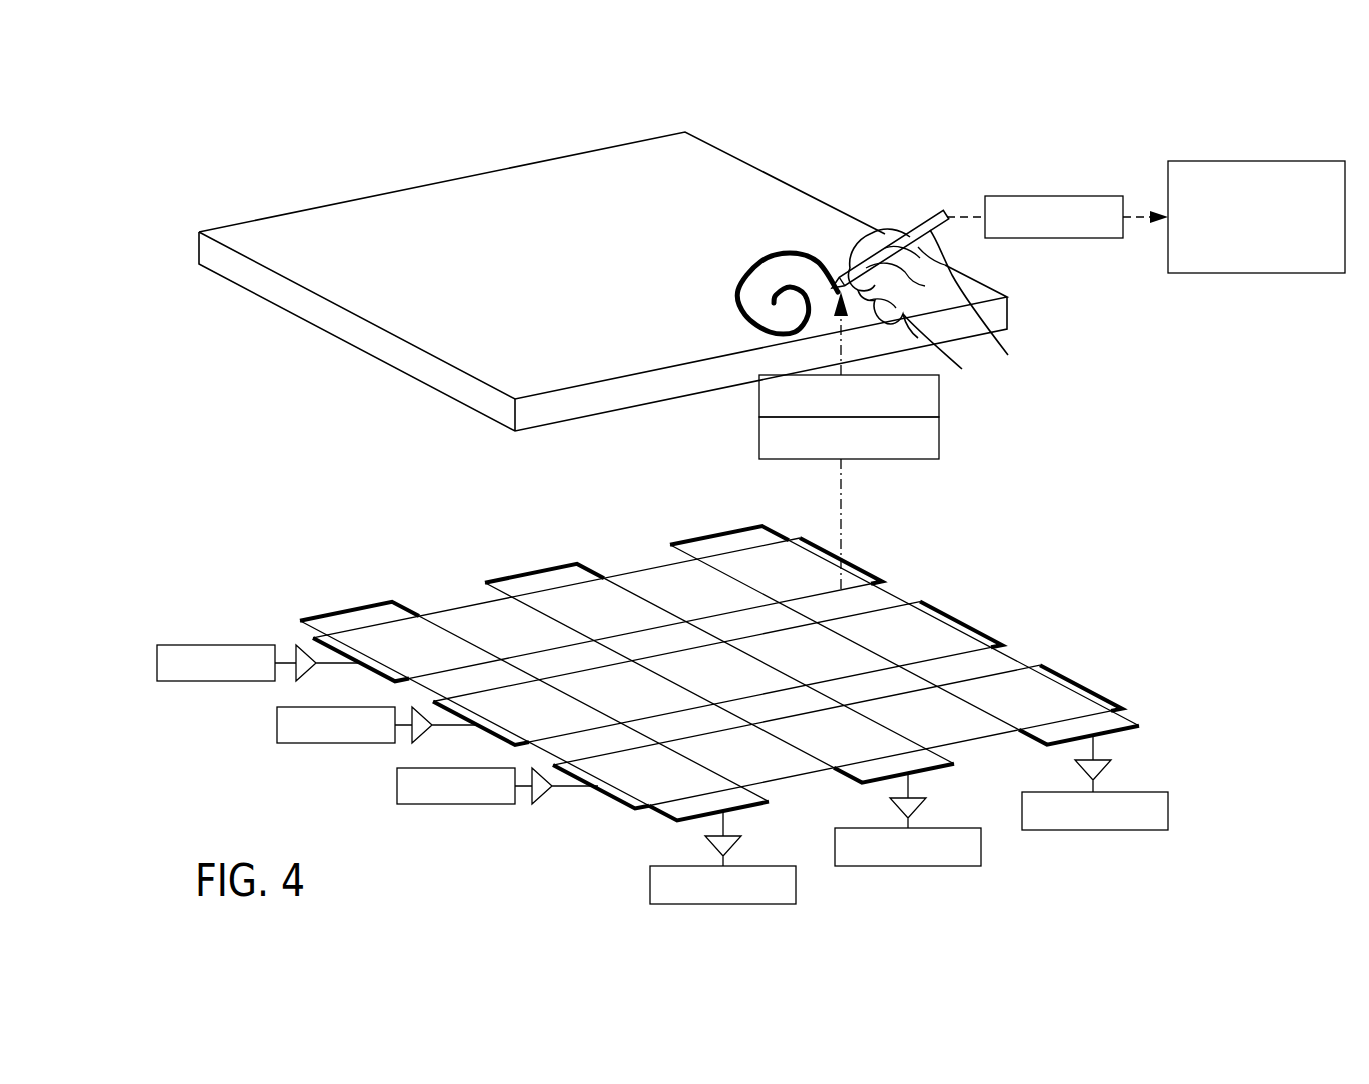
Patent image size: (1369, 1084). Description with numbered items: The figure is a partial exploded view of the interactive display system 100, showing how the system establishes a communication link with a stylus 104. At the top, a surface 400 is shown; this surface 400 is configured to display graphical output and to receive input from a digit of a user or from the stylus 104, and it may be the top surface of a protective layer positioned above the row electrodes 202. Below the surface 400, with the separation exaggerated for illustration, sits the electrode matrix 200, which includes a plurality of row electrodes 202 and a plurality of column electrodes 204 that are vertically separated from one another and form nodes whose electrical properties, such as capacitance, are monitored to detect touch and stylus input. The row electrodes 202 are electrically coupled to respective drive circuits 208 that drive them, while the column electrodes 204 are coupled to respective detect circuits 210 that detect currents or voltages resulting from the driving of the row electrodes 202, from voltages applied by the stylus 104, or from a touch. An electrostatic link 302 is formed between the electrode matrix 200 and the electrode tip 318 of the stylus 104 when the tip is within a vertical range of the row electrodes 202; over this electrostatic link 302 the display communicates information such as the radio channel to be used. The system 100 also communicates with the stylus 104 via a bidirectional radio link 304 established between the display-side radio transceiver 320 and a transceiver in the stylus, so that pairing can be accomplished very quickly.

The interactive display system 100 is at (487, 125).
The surface 400 is at (672, 152).
The stylus 104 is at (921, 216).
The electrode tip 318 is at (840, 270).
The electrostatic link 302 is at (850, 553).
The bidirectional radio link 304 is at (961, 216).
The display-side radio transceiver 320 is at (1238, 257).
The electrode matrix 200 is at (100, 760).
The row electrodes 202 is at (1042, 605).
The column electrodes 204 is at (525, 548).
The drive circuits 208 is at (267, 675).
The detect circuits 210 is at (784, 897).